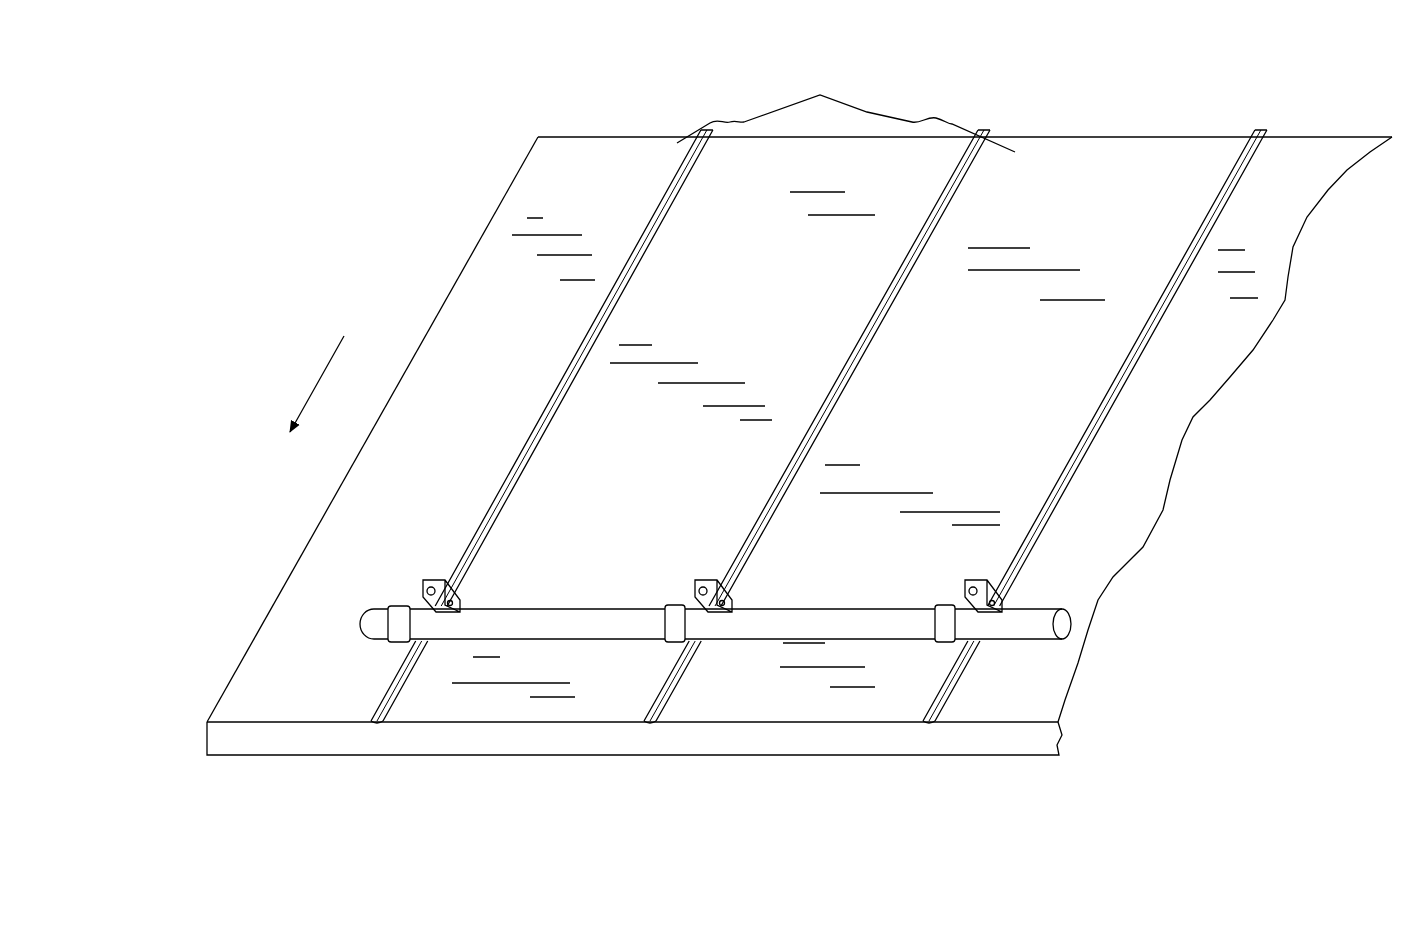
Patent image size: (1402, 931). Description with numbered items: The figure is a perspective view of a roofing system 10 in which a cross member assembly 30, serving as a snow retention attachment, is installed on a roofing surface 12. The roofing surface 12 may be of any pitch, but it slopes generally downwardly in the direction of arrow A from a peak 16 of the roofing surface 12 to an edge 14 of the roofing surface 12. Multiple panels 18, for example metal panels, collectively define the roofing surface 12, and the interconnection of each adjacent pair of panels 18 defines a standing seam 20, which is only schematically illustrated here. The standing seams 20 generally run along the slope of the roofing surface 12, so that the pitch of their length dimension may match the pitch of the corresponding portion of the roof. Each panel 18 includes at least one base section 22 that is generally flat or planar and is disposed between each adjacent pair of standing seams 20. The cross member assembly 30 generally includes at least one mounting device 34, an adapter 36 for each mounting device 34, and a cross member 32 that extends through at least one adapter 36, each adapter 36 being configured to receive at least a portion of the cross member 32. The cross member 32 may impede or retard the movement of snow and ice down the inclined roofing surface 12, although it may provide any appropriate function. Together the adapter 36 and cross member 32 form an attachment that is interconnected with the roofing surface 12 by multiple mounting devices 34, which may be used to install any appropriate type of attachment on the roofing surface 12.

The roofing system 10 is at (350, 182).
The roofing surface 12 is at (500, 118).
The edge 14 is at (293, 757).
The peak 16 is at (634, 137).
The panel 18 is at (815, 152).
The standing seam 20 is at (1258, 132).
The base section 22 is at (506, 369).
The cross member assembly 30 is at (548, 588).
The cross member 32 is at (383, 612).
The mounting device 34 is at (731, 602).
The adapter 36 is at (672, 617).